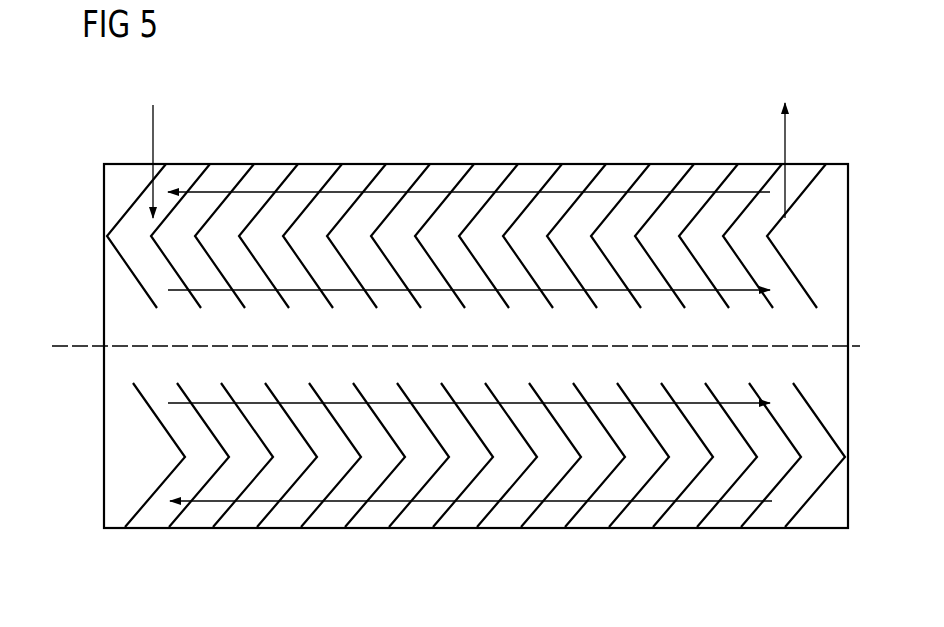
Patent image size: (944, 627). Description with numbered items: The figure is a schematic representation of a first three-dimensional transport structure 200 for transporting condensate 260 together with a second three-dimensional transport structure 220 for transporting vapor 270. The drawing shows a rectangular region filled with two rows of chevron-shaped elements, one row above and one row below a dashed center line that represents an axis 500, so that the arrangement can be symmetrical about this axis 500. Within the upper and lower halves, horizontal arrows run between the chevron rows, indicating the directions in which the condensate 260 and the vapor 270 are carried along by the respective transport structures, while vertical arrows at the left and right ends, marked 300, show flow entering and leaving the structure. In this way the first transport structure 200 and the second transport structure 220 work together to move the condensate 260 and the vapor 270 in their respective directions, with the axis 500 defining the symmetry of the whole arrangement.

The first three-dimensional transport structure 200 is at (500, 182).
The second three-dimensional transport structure 220 is at (463, 303).
The condensate 260 is at (307, 185).
The vapor 270 is at (305, 292).
The fluid flow direction 300 is at (155, 112).
The axis 500 is at (71, 345).